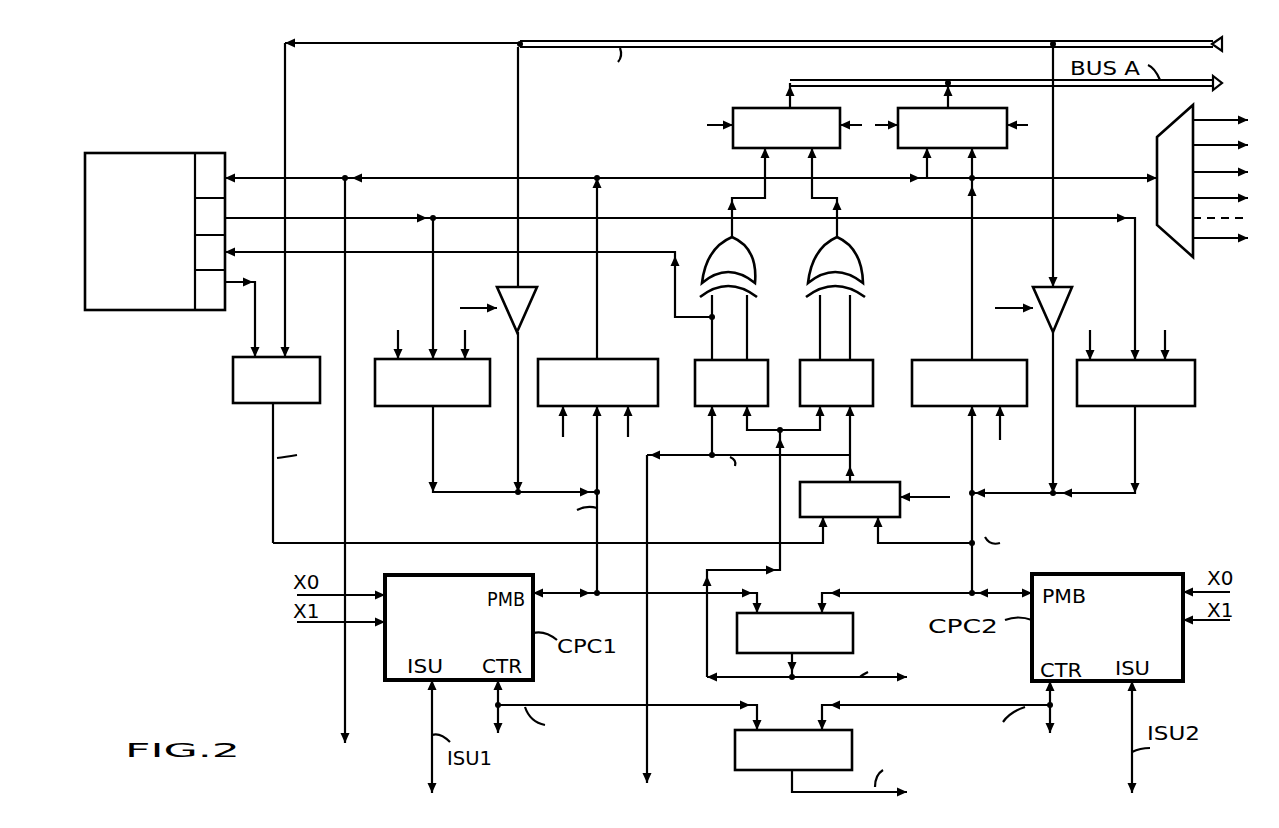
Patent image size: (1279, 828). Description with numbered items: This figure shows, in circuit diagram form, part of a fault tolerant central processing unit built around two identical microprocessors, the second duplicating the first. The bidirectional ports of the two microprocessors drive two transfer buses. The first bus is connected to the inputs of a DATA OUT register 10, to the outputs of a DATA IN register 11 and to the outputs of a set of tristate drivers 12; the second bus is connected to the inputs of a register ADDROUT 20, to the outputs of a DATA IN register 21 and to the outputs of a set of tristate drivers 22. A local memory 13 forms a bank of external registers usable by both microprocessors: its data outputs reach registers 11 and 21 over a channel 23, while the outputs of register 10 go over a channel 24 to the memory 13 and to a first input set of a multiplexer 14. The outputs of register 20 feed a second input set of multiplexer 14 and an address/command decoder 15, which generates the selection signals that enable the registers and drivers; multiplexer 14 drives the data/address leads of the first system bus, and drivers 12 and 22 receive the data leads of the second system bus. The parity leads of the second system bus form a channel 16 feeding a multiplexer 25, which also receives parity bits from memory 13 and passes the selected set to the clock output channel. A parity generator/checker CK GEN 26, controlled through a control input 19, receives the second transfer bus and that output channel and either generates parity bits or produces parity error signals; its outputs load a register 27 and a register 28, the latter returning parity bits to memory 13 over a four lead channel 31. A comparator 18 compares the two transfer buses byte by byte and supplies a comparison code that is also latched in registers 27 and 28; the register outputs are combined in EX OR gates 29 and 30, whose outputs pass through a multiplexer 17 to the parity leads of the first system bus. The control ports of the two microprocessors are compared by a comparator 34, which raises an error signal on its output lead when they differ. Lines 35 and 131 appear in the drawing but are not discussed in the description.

The DATA OUT register 10 is at (620, 359).
The DATA IN register 11 is at (390, 406).
The set of tristate drivers 12 is at (530, 300).
The local memory 13 is at (137, 310).
The multiplexer 14 is at (1000, 148).
The address/command decoder 15 is at (1157, 140).
The channel 16 is at (447, 47).
The multiplexer 17 is at (762, 108).
The comparator 18 is at (790, 612).
The control input 19 is at (916, 498).
The register ADDROUT 20 is at (925, 358).
The DATA IN register 21 is at (1157, 406).
The set of tristate drivers 22 is at (1068, 298).
The channel 23 is at (297, 218).
The channel 24 is at (312, 178).
The multiplexer 25 is at (233, 386).
The parity bit generator/checker CK GEN 26 is at (850, 517).
The register 27 is at (865, 358).
The register 28 is at (760, 358).
The EX OR gate 29 is at (863, 257).
The EX OR gate 30 is at (748, 257).
The four lead channel 31 is at (628, 253).
The comparator 34 is at (735, 750).
The lead 35 is at (343, 688).
The lead 131 is at (647, 656).